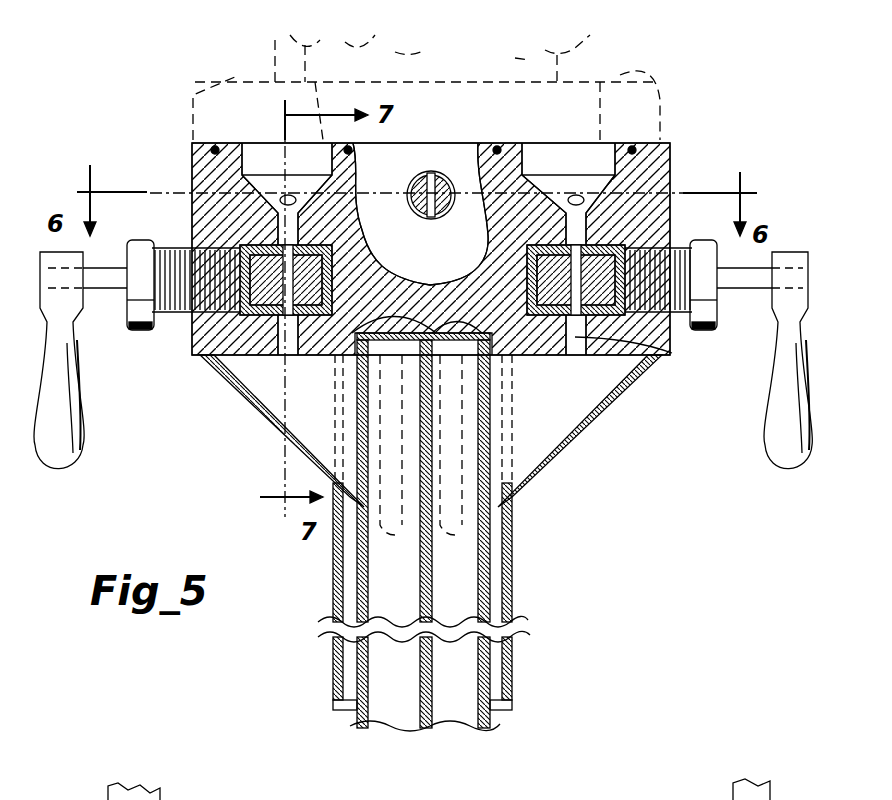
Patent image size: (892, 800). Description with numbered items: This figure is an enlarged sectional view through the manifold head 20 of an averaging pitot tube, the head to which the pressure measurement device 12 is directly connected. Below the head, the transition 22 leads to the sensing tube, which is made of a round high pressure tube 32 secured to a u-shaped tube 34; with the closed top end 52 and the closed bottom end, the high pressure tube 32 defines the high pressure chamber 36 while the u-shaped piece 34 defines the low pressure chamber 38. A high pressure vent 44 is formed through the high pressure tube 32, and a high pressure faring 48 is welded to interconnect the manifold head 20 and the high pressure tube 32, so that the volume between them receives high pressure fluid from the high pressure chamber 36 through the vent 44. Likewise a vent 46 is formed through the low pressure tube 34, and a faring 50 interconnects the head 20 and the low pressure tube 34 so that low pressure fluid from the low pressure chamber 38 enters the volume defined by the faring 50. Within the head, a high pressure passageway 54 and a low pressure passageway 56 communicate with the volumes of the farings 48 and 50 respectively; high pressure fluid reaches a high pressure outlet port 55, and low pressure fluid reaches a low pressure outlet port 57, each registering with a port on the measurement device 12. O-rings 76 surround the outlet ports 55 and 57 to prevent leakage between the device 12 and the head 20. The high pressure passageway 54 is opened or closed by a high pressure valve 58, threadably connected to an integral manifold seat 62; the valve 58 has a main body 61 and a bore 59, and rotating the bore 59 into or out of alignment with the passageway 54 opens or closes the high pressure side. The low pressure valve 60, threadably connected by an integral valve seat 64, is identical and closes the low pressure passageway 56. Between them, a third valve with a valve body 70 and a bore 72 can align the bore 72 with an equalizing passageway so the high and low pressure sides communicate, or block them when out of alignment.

The pressure measurement device 12 is at (640, 90).
The manifold head 20 is at (672, 145).
The transition 22 is at (515, 528).
The high pressure tube 32 is at (362, 535).
The u-shaped tube 34 is at (490, 569).
The high pressure chamber 36 is at (408, 590).
The low pressure chamber 38 is at (468, 590).
The high pressure vent 44 is at (360, 417).
The low pressure vent 46 is at (490, 420).
The high pressure faring 48 is at (220, 377).
The low pressure faring 50 is at (604, 410).
The top end 52 is at (303, 308).
The high pressure passageway 54 is at (190, 345).
The high pressure outlet port 55 is at (245, 143).
The low pressure passageway 56 is at (675, 352).
The low pressure outlet port 57 is at (612, 157).
The high pressure valve 58 is at (50, 383).
The bore 59 is at (183, 246).
The low pressure valve 60 is at (815, 265).
The main body 61 is at (262, 243).
The manifold seat 62 is at (185, 318).
The valve seat 64 is at (683, 246).
The valve body 70 is at (408, 173).
The bore 72 is at (440, 173).
The O-rings 76 is at (217, 150).